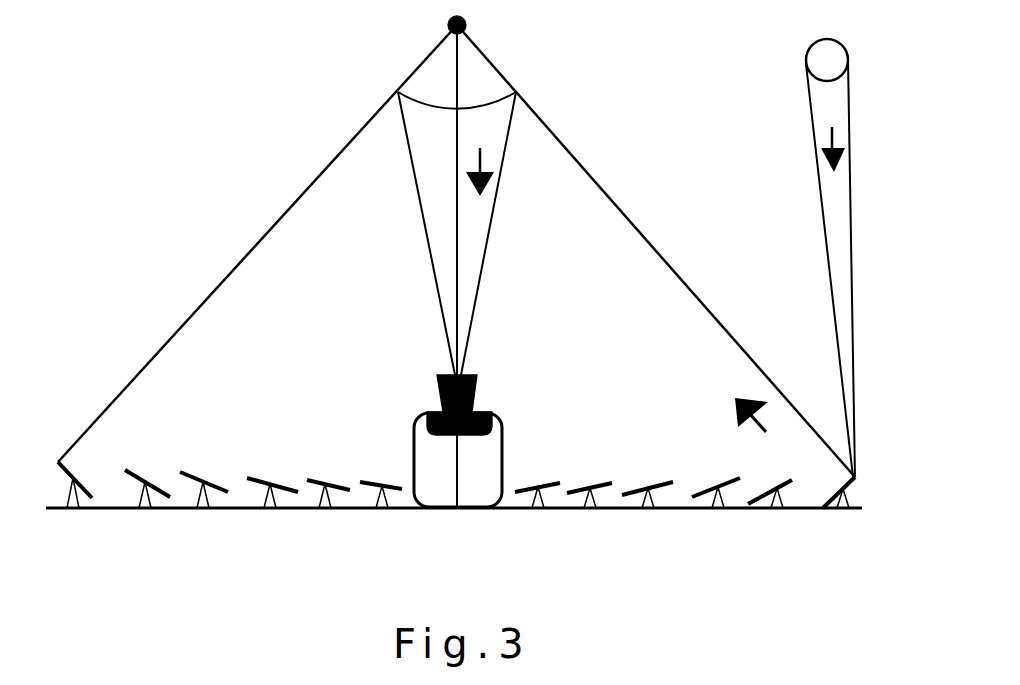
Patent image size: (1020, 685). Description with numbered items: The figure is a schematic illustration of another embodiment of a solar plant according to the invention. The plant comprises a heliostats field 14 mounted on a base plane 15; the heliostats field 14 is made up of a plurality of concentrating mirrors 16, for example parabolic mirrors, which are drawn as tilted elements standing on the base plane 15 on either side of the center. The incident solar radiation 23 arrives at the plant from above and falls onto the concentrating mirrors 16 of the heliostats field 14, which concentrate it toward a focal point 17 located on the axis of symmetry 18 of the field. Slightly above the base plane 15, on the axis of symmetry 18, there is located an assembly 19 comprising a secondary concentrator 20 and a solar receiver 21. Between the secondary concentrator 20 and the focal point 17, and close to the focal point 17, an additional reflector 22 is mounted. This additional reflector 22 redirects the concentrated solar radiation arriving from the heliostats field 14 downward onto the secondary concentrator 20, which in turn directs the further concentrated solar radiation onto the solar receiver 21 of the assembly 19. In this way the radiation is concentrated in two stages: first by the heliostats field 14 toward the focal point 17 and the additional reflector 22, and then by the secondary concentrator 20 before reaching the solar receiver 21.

The heliostats field 14 is at (214, 455).
The base plane 15 is at (697, 511).
The concentrating mirrors 16 is at (641, 487).
The focal point 17 is at (467, 25).
The axis of symmetry 18 is at (456, 231).
The assembly 19 is at (426, 415).
The secondary concentrator 20 is at (438, 382).
The solar receiver 21 is at (483, 453).
The additional reflector 22 is at (487, 106).
The incident solar radiation 23 is at (835, 227).